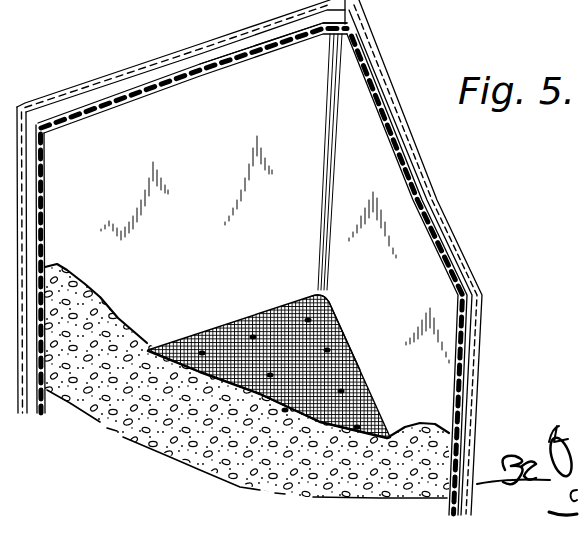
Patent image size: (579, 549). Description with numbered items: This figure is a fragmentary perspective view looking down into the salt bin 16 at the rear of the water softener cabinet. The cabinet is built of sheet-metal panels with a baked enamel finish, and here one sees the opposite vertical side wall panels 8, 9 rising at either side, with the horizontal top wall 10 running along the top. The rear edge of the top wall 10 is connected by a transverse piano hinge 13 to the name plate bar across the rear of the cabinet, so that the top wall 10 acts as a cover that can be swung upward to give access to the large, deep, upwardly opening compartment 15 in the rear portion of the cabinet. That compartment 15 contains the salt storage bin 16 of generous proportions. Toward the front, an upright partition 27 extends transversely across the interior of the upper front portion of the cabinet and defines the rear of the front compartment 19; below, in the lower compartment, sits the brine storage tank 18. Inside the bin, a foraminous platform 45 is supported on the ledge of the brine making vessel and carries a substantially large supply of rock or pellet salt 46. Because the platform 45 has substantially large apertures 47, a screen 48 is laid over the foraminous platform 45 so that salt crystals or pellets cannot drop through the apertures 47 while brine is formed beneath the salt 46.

The side wall panel 9 is at (88, 82).
The compartment 15 is at (150, 74).
The salt storage bin 16 is at (230, 66).
The upright partition 27 is at (436, 183).
The rock or pellet salt 46 is at (118, 318).
The foraminous platform 45 is at (213, 328).
The screen 48 is at (275, 318).
The apertures 47 is at (343, 390).
The piano hinge 13 is at (28, 5).
The top wall 10 is at (86, 5).
The brine storage tank 18 is at (415, 2).
The side wall panel 8 is at (460, 0).
The front compartment 19 is at (515, 0).